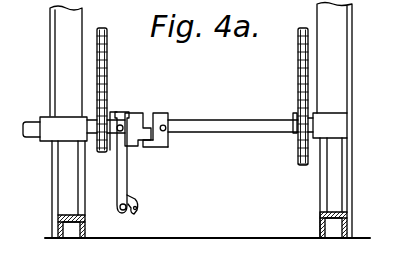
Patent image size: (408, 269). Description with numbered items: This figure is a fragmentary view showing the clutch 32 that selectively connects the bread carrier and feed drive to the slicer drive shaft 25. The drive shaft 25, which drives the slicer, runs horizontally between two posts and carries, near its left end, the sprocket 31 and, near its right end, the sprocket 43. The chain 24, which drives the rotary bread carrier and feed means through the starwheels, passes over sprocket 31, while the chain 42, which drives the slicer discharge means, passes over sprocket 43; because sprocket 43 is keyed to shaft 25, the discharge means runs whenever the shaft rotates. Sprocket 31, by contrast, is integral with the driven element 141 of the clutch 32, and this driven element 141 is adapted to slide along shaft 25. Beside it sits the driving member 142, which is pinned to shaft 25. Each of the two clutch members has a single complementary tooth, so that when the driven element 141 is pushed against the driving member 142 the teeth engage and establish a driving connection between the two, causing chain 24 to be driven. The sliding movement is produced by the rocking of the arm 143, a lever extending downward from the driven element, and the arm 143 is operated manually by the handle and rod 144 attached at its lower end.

The chain 24 is at (107, 79).
The drive shaft 25 is at (36, 137).
The sprocket 31 is at (109, 152).
The clutch 32 is at (137, 148).
The chain 42 is at (296, 58).
The sprocket 43 is at (303, 166).
The driven element 141 is at (133, 114).
The driving member 142 is at (167, 113).
The arm 143 is at (127, 178).
The handle and rod 144 is at (137, 210).